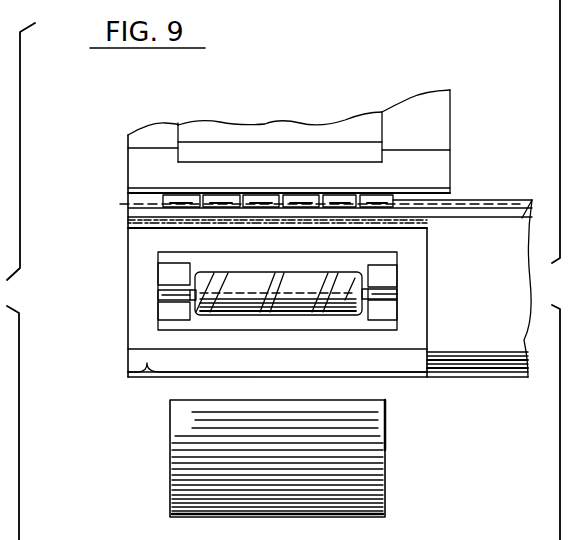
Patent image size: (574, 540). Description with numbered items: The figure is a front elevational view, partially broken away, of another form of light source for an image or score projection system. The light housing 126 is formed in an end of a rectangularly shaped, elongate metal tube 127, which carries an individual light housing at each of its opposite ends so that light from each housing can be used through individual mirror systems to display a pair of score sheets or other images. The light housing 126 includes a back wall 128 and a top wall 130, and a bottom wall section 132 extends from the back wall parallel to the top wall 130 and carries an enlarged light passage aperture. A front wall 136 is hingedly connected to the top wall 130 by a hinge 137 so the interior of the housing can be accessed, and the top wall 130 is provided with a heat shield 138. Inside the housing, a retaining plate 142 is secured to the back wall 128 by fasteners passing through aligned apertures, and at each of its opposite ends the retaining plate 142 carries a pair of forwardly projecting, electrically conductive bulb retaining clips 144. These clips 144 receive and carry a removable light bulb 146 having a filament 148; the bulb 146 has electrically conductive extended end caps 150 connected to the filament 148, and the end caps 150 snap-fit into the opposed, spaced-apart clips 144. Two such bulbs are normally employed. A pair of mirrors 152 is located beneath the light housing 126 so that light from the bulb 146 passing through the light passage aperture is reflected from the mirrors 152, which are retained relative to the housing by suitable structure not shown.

The light housing 126 is at (160, 232).
The metal tube 127 is at (507, 200).
The back wall 128 is at (143, 315).
The top wall 130 is at (127, 203).
The bottom wall section 132 is at (130, 365).
The front wall 136 is at (440, 133).
The hinge 137 is at (208, 195).
The heat shield 138 is at (284, 134).
The retaining plate 142 is at (287, 262).
The bulb retaining clips 144 is at (180, 273).
The light bulb 146 is at (312, 310).
The filament 148 is at (218, 322).
The end caps 150 is at (383, 294).
The mirrors 152 is at (378, 440).